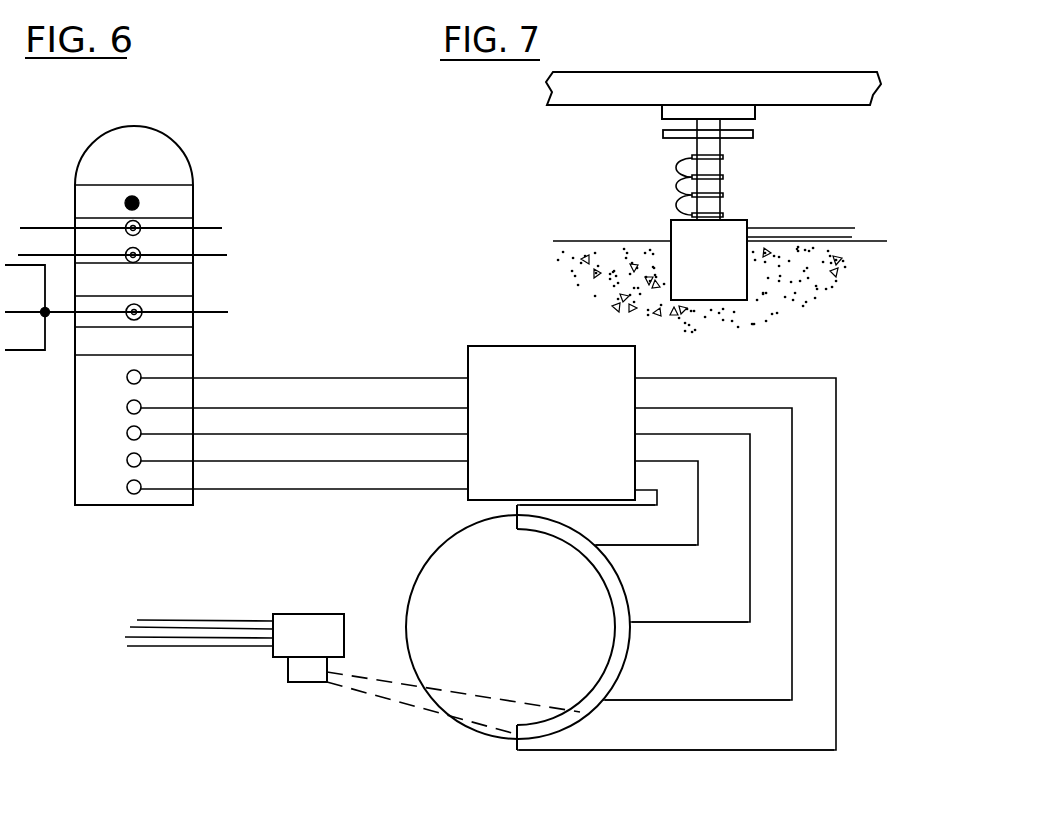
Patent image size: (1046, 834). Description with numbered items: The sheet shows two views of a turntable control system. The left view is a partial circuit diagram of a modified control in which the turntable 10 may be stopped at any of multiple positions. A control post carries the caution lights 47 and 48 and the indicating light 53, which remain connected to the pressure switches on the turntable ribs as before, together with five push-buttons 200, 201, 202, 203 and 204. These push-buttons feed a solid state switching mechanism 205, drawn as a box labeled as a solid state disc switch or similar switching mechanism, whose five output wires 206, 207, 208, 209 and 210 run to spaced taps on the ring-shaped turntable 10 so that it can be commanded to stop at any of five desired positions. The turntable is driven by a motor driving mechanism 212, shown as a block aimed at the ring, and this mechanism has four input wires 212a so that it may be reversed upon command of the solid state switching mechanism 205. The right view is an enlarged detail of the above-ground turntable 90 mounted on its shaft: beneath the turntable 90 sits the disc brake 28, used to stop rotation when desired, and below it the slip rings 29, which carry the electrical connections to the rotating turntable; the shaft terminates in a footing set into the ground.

In FIG. 6, the turntable 10 is at (440, 566).
In FIG. 7, the disc brake 28 is at (753, 134).
In FIG. 7, the slip rings 29 is at (678, 191).
In FIG. 6, the caution light 47 is at (136, 221).
In FIG. 6, the caution light 48 is at (137, 248).
In FIG. 6, the indicating light 53 is at (138, 304).
In FIG. 7, the turntable 90 is at (767, 72).
In FIG. 6, the push-button 200 is at (135, 370).
In FIG. 6, the push-button 201 is at (135, 400).
In FIG. 6, the push-button 202 is at (135, 426).
In FIG. 6, the push-button 203 is at (135, 453).
In FIG. 6, the push-button 204 is at (135, 480).
In FIG. 6, the solid state switching mechanism 205 is at (607, 346).
In FIG. 6, the output wire 206 is at (586, 508).
In FIG. 6, the output wire 207 is at (633, 548).
In FIG. 6, the output wire 208 is at (652, 624).
In FIG. 6, the output wire 209 is at (628, 702).
In FIG. 6, the output wire 210 is at (583, 752).
In FIG. 6, the motor driving mechanism 212 is at (338, 585).
In FIG. 6, the input wires 212a is at (120, 593).